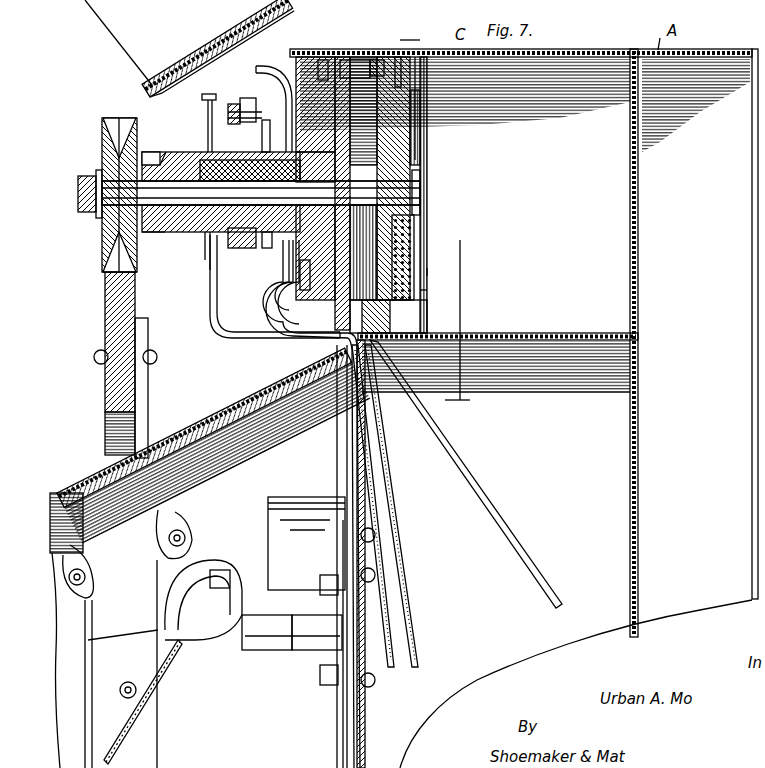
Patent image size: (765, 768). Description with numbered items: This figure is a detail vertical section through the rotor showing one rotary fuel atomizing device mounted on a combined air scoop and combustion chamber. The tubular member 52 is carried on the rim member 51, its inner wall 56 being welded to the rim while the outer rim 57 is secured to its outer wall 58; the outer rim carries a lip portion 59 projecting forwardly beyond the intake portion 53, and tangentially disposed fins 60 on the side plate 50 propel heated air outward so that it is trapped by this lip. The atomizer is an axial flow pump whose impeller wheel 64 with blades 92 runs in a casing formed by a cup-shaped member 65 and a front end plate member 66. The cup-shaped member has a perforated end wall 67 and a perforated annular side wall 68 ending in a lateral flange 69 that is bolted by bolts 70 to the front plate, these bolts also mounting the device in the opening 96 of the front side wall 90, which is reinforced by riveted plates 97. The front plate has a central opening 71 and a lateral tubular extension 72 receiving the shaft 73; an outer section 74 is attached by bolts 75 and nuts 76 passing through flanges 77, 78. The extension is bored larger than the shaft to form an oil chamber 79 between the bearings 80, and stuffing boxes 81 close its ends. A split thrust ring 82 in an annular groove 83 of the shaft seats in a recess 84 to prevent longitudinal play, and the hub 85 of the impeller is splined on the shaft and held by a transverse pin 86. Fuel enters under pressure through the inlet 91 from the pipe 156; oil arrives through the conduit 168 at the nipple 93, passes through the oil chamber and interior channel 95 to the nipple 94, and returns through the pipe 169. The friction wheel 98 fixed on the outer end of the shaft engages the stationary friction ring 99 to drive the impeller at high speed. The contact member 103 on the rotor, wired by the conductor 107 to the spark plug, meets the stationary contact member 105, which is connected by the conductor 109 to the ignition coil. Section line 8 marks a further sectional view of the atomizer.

The section line 8 is at (435, 222).
The side plate 50 is at (565, 408).
The rim member 51 is at (584, 342).
The tubular member 52 is at (628, 214).
The intake portion 53 is at (160, 52).
The inner wall 56 is at (578, 322).
The outer rim 57 is at (588, 50).
The outer wall 58 is at (578, 60).
The lip portion 59 is at (297, 60).
The fin 60 is at (268, 510).
The impeller wheel 64 is at (400, 156).
The cup-shaped member 65 is at (427, 290).
The front end plate member 66 is at (334, 344).
The end wall 67 is at (427, 226).
The annular side wall 68 is at (408, 302).
The lateral flange 69 is at (356, 60).
The bolt 70 is at (330, 57).
The central opening 71 is at (352, 193).
The tubular extension 72 is at (258, 240).
The shaft 73 is at (196, 214).
The outer section 74 is at (168, 156).
The bolt 75 is at (212, 275).
The nut 76 is at (200, 308).
The flange 77 is at (238, 265).
The flange 78 is at (248, 288).
The oil chamber 79 is at (208, 230).
The bearing 80 is at (166, 230).
The stuffing box 81 is at (166, 153).
The split thrust ring 82 is at (212, 255).
The annular groove 83 is at (249, 194).
The recess 84 is at (255, 111).
The hub 85 is at (420, 208).
The transverse pin 86 is at (428, 180).
The front side wall 90 is at (378, 60).
The inlet 91 is at (305, 284).
The impeller wheel blade 92 is at (408, 134).
The nipple 93 is at (270, 248).
The nipple 94 is at (270, 125).
The interior channel 95 is at (204, 160).
The opening 96 is at (427, 272).
The plate 97 is at (324, 60).
The friction wheel 98 is at (104, 135).
The friction ring 99 is at (106, 312).
The electrical contact member 103 is at (312, 652).
The contact member 105 is at (256, 650).
The electrical conductor 107 is at (340, 466).
The conductor 109 is at (154, 672).
The pipe 156 is at (283, 308).
The conduit 168 is at (408, 580).
The pipe 169 is at (268, 66).